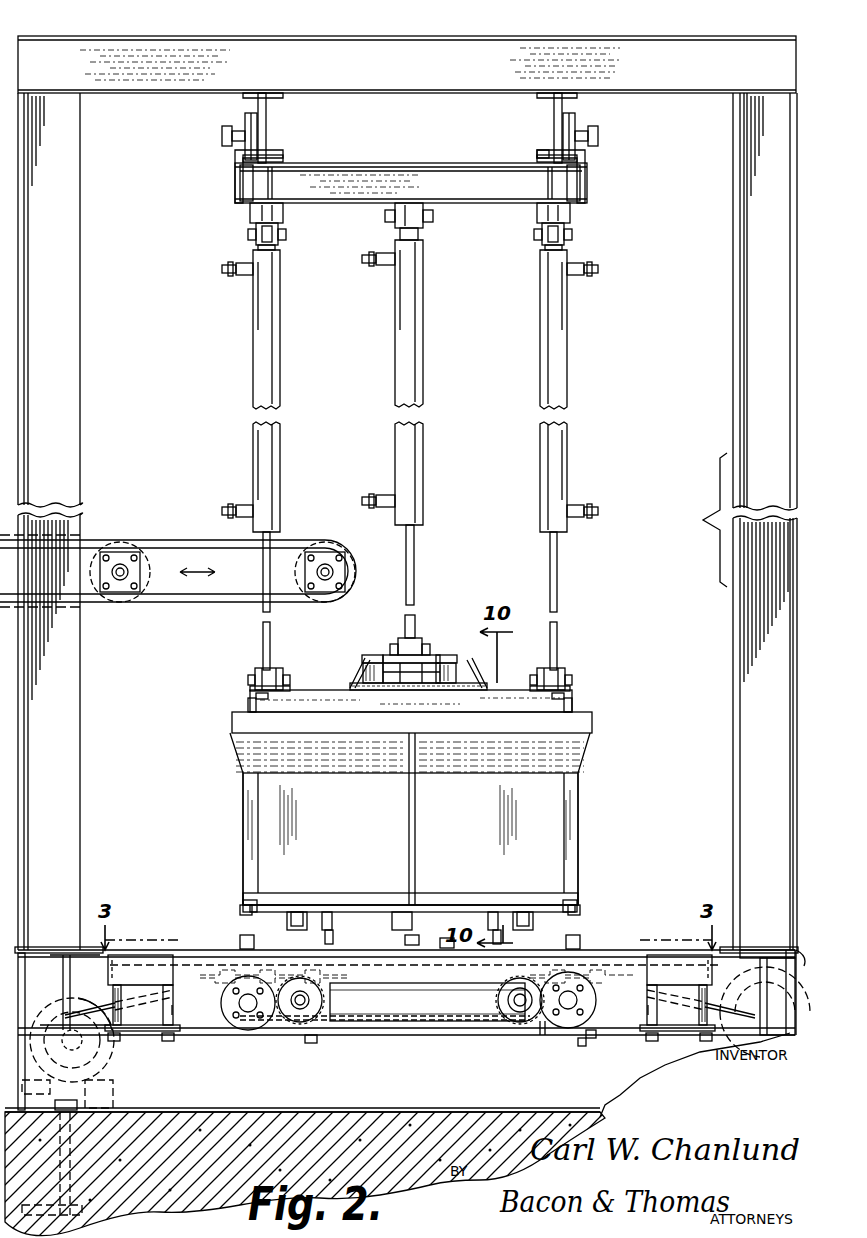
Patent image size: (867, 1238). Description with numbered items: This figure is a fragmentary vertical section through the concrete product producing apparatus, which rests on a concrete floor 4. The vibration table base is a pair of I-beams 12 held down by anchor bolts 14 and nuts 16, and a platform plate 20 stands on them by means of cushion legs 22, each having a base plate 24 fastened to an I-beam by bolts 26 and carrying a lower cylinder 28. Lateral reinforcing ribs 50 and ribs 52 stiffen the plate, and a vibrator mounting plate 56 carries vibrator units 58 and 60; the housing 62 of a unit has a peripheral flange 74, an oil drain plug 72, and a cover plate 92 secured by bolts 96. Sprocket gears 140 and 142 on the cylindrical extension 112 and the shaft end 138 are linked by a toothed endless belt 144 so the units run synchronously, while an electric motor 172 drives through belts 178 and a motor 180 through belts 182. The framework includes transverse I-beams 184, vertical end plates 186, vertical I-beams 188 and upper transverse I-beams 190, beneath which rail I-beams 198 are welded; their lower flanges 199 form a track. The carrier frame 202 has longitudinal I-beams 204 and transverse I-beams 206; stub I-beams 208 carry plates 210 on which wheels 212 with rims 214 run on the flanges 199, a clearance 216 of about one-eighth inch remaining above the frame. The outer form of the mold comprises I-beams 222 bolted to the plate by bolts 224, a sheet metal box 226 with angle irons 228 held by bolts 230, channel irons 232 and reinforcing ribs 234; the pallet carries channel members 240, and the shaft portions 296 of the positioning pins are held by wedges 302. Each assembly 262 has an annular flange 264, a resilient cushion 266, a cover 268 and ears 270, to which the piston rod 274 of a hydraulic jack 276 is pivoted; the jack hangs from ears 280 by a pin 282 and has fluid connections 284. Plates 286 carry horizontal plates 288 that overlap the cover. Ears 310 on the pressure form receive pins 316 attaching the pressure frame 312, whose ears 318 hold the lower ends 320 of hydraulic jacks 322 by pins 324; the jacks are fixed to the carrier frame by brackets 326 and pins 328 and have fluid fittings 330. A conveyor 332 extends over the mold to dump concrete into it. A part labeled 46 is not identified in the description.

The transverse I-beams 190 is at (213, 36).
The vertical I-beams 188 is at (70, 510).
The carrier frame 202 is at (409, 153).
The transverse I-beams 206 is at (455, 170).
The rail I-beams 198 is at (268, 100).
The lower horizontal flanges 199 is at (278, 158).
The wheel 212 is at (258, 120).
The rim 214 is at (230, 128).
The vertically projecting plates 210 is at (236, 160).
The stub I-beams 208 is at (248, 185).
The longitudinally extending I-beams 204 is at (275, 185).
The clearance 216 is at (545, 157).
The brackets 326 is at (250, 213).
The pins 328 is at (286, 232).
The hydraulic jacks 322 is at (277, 420).
The fluid fittings 330 is at (250, 275).
The lower ends 320 is at (263, 608).
The ears 318 is at (257, 670).
The pins 324 is at (284, 686).
The pins 316 is at (248, 700).
The ears 310 is at (263, 700).
The pin 282 is at (425, 212).
The ears 280 is at (388, 215).
The hydraulic jack 276 is at (424, 424).
The fluid connections 284 is at (380, 266).
The piston rod 274 is at (414, 582).
The assemblies 262 is at (441, 632).
The ears 270 is at (398, 650).
The annular flange 264 is at (395, 684).
The resilient cushion 266 is at (428, 684).
The horizontally extending plates 288 is at (362, 659).
The upwardly extending plates 286 is at (352, 684).
The cup-shaped cover 268 is at (364, 655).
The pressure frame 312 is at (520, 690).
The channel irons 232 is at (592, 722).
The reinforcing ribs 234 is at (582, 760).
The sheet metal box 226 is at (352, 807).
The angle irons 228 is at (250, 893).
The bolts 230 is at (250, 900).
The I-beams 222 is at (255, 912).
The reinforcing channel members 240 is at (297, 913).
The cylindrical shaft portion 296 is at (328, 912).
The wedge 302 is at (496, 930).
The bolts 224 is at (240, 940).
The platform plate 20 is at (340, 930).
The vibrator mounting plate 56 is at (405, 940).
The peripheral flange 74 is at (440, 943).
The carriage frame 46 is at (135, 957).
The lateral reinforcing ribs 50 is at (390, 1000).
The sprocket gear 142 is at (325, 1000).
The shaft end 138 is at (265, 1028).
The sprocket gear 140 is at (512, 1012).
The cylindrical extension 112 is at (518, 1006).
The cover plate 92 is at (562, 1028).
The bolts 96 is at (591, 1038).
The oil drain plug 72 is at (583, 1046).
The vibrator unit 60 is at (543, 1035).
The vibrator unit 58 is at (312, 1043).
The toothed flexible endless belt 144 is at (395, 1022).
The housing 62 is at (470, 1030).
The ribs 52 is at (175, 1005).
The cushion leg 22 is at (172, 1010).
The base plate 24 is at (170, 1043).
The lower cylinder 28 is at (150, 1031).
The belts 182 is at (175, 995).
The motor 180 is at (78, 990).
The transverse I-beams 184 is at (70, 960).
The vertical end plates 186 is at (20, 953).
The electric motor 172 is at (755, 985).
The endless belts 178 is at (760, 1000).
The bolts 26 is at (108, 1055).
The conveyor 332 is at (292, 540).
The concrete floor 4 is at (280, 1112).
The I-beams 12 is at (307, 1112).
The nuts 16 is at (75, 1112).
The anchor bolts 14 is at (75, 1180).